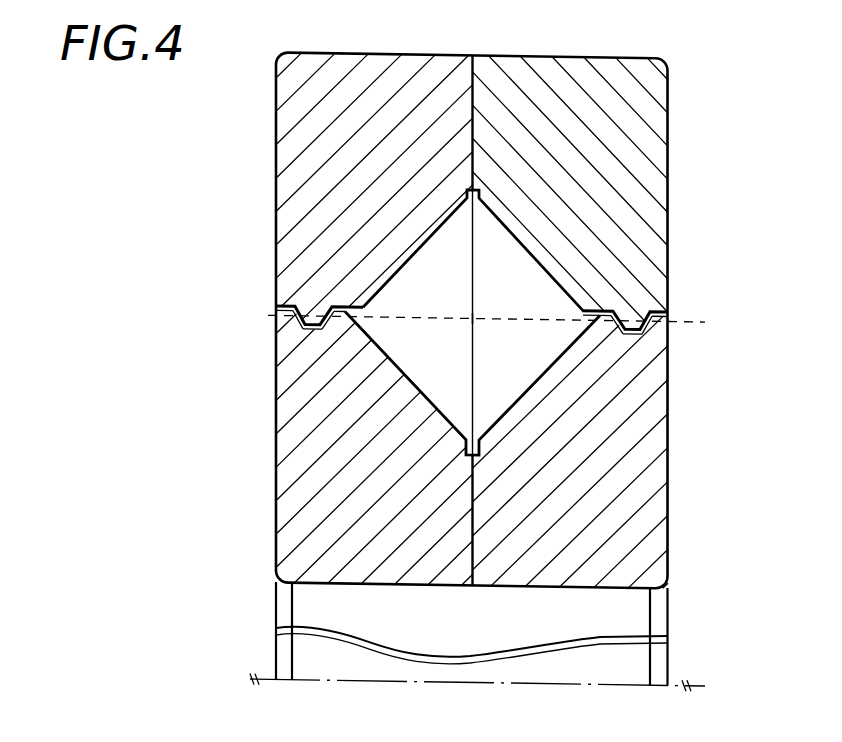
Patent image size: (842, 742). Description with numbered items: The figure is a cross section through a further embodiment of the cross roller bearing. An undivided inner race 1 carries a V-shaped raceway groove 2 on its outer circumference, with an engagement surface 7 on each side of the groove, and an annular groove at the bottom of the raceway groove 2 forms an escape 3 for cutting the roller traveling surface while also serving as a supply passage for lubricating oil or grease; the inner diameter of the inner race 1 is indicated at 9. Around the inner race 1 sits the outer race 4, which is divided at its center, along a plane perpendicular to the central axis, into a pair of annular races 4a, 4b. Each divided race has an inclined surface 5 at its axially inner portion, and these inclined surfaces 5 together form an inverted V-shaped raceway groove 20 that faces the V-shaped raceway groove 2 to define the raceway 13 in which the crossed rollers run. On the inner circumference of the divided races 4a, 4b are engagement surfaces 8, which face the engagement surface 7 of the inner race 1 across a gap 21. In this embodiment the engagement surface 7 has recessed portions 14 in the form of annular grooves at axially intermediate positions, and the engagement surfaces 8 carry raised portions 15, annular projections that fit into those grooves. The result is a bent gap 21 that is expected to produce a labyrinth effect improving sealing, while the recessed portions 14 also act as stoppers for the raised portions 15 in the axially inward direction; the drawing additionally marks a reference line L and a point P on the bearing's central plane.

The inner race 1 is at (598, 524).
The V-shaped raceway groove 2 is at (385, 406).
The escape 3 is at (462, 457).
The outer race 4 is at (670, 108).
The divided annular race 4a is at (577, 68).
The divided annular race 4b is at (345, 64).
The inclined surface 5 is at (443, 224).
The engagement surface 7 is at (378, 309).
The engagement surface 8 is at (578, 317).
The inner diameter 9 is at (570, 589).
The raceway 13 is at (430, 272).
The recessed portion 14 is at (292, 338).
The raised portion 15 is at (313, 306).
The inverted V-shaped raceway groove 20 is at (490, 235).
The gap 21 is at (286, 306).
The reference line L is at (487, 321).
The point P is at (462, 305).